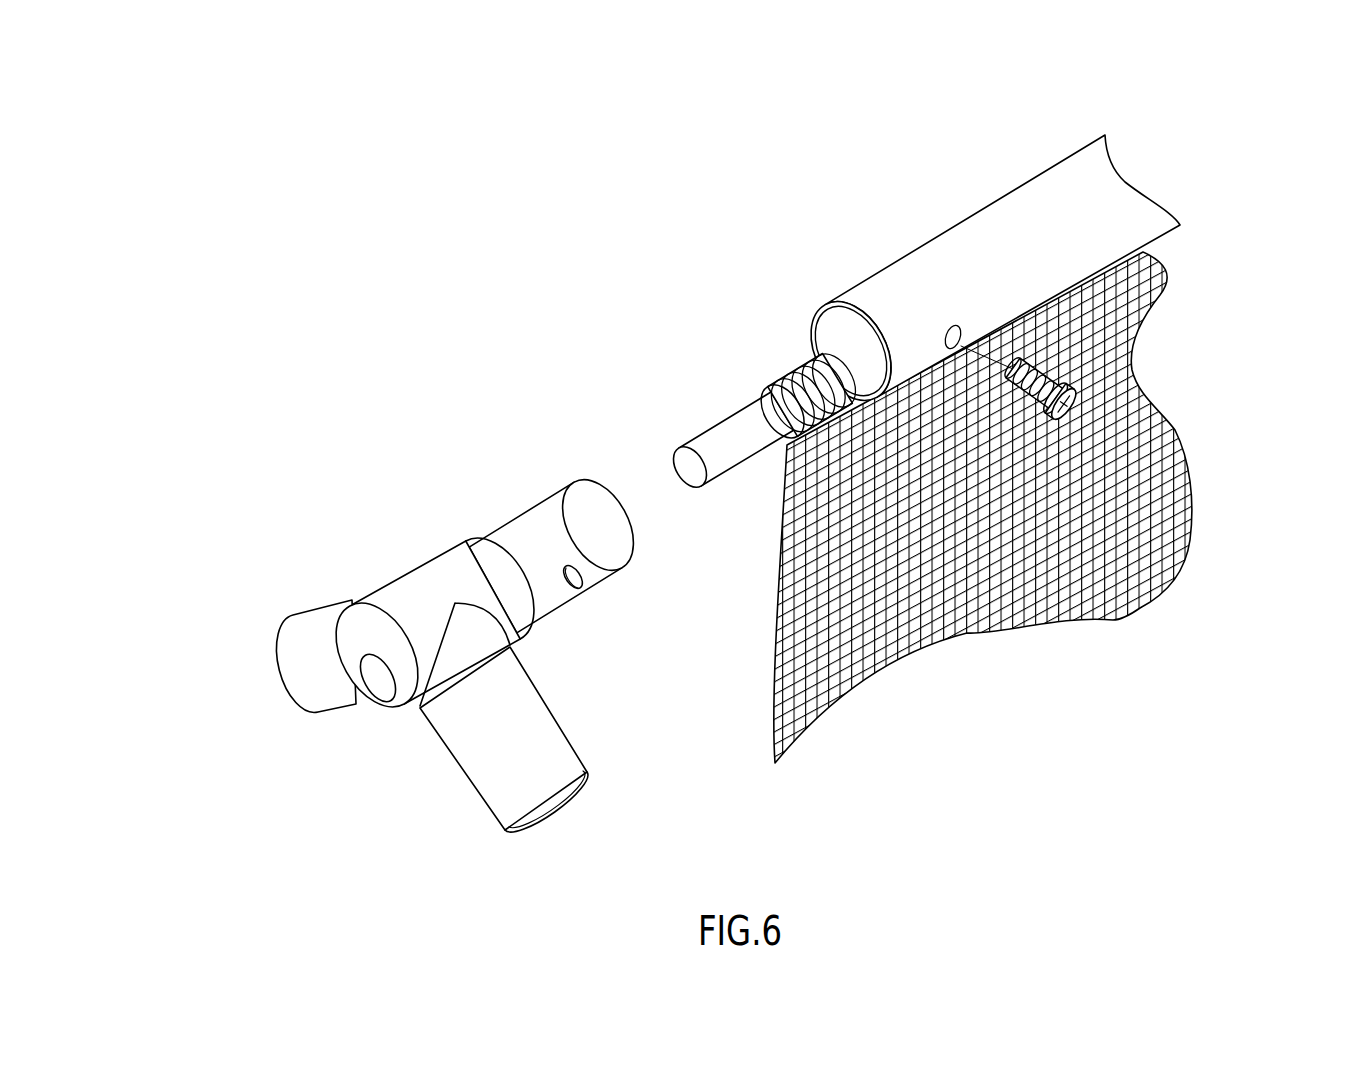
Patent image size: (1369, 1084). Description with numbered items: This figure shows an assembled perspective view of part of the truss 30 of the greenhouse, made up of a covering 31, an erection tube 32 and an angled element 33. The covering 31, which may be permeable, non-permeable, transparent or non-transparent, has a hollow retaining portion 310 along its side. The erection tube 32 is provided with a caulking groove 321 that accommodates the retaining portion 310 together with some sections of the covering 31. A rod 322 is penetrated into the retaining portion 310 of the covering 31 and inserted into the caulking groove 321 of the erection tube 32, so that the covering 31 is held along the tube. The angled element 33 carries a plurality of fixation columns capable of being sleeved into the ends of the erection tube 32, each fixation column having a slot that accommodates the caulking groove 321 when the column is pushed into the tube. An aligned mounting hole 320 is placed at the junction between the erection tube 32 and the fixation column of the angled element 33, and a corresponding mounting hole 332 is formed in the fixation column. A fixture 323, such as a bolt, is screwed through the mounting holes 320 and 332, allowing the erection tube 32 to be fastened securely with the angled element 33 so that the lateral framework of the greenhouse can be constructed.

The truss 30 is at (931, 421).
The covering 31 is at (963, 607).
The erection tube 32 is at (1033, 220).
The mounting hole 320 is at (950, 326).
The caulking groove 321 is at (813, 327).
The rod 322 is at (717, 437).
The fixture 323 is at (1130, 367).
The retaining portion 310 is at (773, 412).
The angled element 33 is at (373, 591).
The mounting hole 332 is at (570, 572).